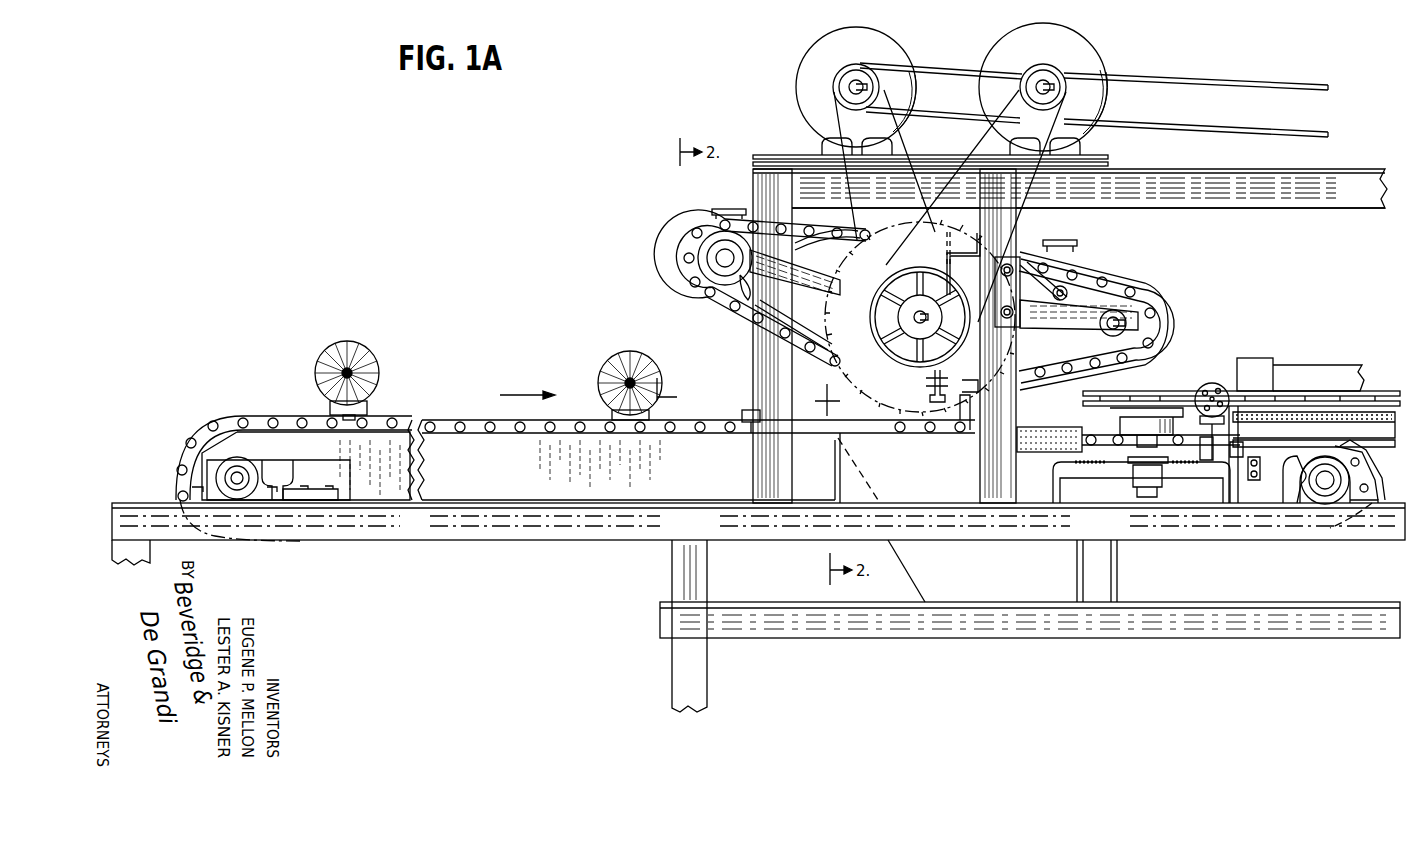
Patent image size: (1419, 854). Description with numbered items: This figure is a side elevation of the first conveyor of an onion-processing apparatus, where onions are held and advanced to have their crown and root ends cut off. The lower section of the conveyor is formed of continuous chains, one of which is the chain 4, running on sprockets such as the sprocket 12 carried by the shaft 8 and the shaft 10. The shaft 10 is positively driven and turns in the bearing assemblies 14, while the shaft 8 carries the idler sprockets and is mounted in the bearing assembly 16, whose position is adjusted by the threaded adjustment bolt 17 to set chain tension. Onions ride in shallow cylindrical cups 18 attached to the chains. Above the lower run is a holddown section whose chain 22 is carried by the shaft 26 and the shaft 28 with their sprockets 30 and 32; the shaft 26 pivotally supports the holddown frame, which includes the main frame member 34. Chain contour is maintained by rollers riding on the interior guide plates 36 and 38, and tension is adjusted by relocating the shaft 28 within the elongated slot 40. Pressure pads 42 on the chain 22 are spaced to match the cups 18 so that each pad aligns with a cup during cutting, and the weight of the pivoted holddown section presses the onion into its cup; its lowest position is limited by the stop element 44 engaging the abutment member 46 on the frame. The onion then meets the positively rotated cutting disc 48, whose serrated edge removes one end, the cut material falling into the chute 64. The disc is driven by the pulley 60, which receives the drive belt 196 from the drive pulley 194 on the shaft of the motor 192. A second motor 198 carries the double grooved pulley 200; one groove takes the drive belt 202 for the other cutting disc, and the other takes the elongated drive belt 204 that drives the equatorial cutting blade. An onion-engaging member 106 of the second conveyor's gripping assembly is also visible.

The continuous chain 4 is at (575, 472).
The shaft 8 is at (240, 472).
The shaft 10 is at (1336, 478).
The sprocket 12 is at (1345, 450).
The bearing assembly 14 is at (1362, 484).
The bearing assembly 16 is at (272, 463).
The threaded adjustment bolt 17 is at (318, 489).
The cylindrical cup 18 is at (375, 395).
The chain 22 is at (830, 362).
The shaft 26 is at (716, 256).
The shaft 28 is at (1148, 326).
The sprocket 30 is at (724, 302).
The sprocket 32 is at (1112, 282).
The main frame member 34 is at (810, 268).
The interior guide plate 36 is at (818, 233).
The interior guide plate 38 is at (780, 312).
The elongated slot 40 is at (1142, 303).
The pressure pad 42 is at (722, 208).
The stop element 44 is at (1065, 285).
The abutment member 46 is at (1044, 326).
The cutting disc 48 is at (905, 230).
The pulley 60 is at (885, 350).
The chute 64 is at (897, 481).
The onion-engaging member 106 is at (1200, 390).
The motor 192 is at (998, 48).
The drive pulley 194 is at (1062, 87).
The drive belt 196 is at (1016, 214).
The motor 198 is at (813, 48).
The double grooved pulley 200 is at (835, 89).
The drive belt 202 is at (897, 146).
The elongated drive belt 204 is at (1223, 78).